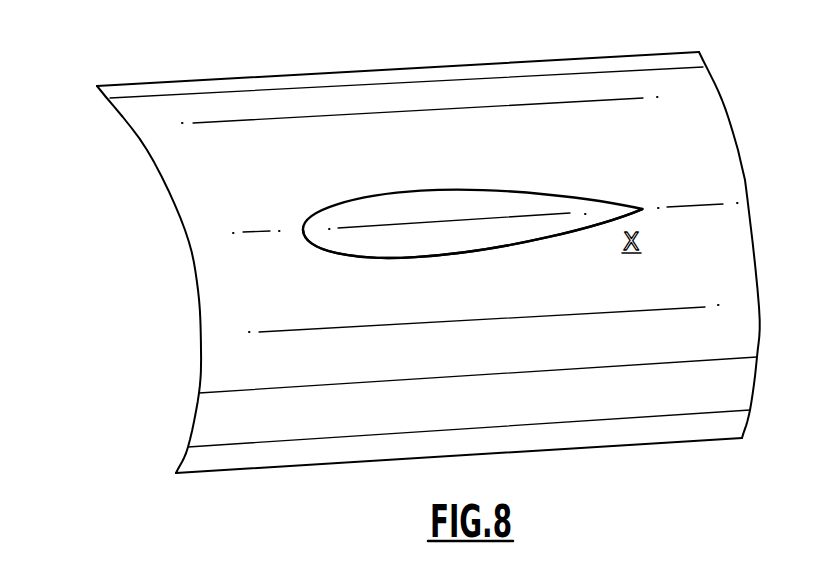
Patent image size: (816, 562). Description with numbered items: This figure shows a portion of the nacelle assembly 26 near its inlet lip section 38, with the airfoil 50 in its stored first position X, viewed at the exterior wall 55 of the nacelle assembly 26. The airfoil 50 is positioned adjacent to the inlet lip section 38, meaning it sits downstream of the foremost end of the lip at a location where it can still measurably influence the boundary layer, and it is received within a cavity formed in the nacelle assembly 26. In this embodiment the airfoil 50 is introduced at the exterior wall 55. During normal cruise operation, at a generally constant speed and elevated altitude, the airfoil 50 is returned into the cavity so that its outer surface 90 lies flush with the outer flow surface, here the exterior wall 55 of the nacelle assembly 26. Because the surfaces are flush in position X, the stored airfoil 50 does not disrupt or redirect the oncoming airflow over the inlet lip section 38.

The nacelle assembly 26 is at (270, 62).
The inlet lip section 38 is at (120, 170).
The exterior wall 55 is at (623, 93).
The outer surface 90 is at (550, 190).
The airfoil 50 is at (443, 255).